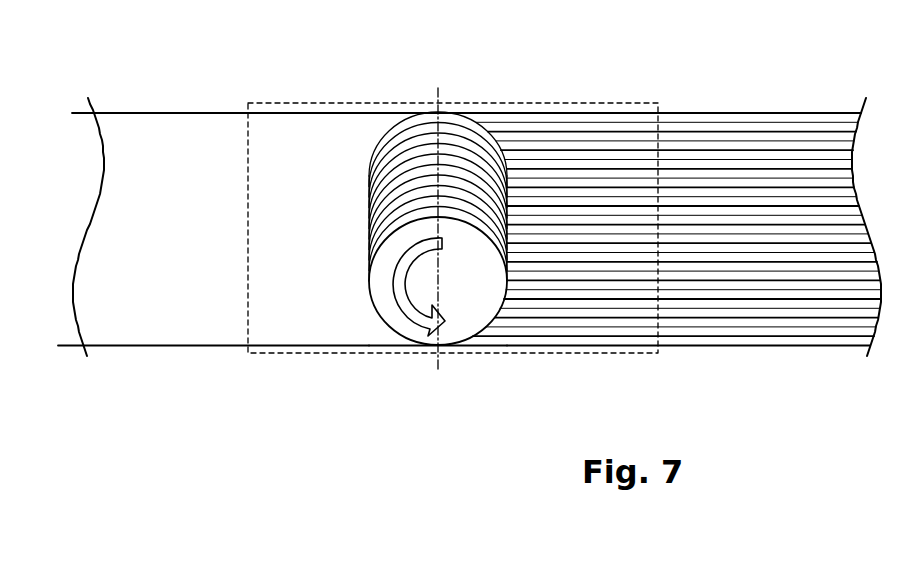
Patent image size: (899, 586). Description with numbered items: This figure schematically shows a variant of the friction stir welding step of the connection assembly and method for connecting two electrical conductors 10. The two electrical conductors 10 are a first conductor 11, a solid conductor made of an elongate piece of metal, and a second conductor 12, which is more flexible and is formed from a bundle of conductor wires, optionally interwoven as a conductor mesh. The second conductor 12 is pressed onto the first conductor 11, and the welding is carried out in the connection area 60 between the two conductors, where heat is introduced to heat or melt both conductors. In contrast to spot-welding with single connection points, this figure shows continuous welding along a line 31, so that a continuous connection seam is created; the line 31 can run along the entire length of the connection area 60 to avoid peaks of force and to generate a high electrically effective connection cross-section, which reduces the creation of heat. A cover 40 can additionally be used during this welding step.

The electrical conductors 10 is at (469, 205).
The first conductor 11 is at (192, 120).
The second conductor 12 is at (717, 130).
The line 31 is at (443, 97).
The cover 40 is at (302, 99).
The connection area 60 is at (438, 374).